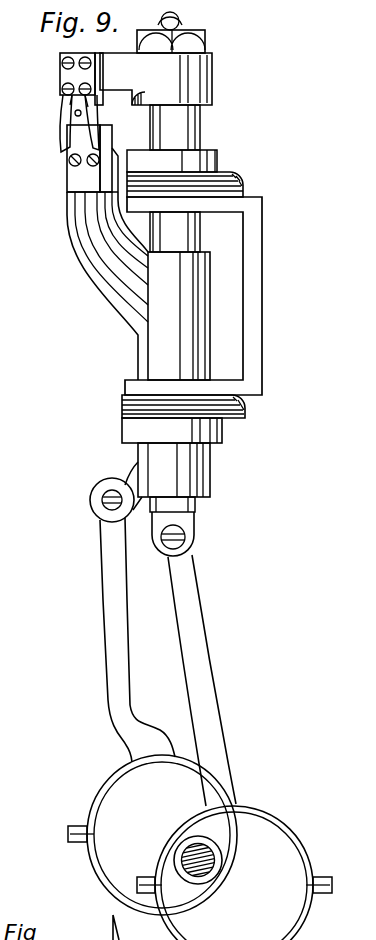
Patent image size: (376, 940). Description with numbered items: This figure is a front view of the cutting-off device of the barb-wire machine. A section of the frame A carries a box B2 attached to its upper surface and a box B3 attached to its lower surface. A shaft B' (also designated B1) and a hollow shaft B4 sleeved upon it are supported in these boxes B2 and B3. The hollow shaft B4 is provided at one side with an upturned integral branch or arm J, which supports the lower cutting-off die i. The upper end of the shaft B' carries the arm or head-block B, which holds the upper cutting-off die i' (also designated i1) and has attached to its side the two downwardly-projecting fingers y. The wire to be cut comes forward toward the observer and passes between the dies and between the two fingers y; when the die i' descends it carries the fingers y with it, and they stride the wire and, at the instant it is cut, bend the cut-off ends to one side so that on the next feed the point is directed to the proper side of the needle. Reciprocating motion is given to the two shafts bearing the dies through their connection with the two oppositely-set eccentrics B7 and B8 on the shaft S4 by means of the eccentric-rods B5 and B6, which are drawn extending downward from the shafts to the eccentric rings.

The frame A is at (250, 307).
The head-block B is at (156, 58).
The shaft B' is at (187, 330).
The shaft B1 is at (206, 511).
The box B2 is at (185, 175).
The box B3 is at (183, 419).
The hollow shaft B4 is at (150, 387).
The eccentric-rod B5 is at (202, 680).
The eccentric-rod B6 is at (137, 640).
The eccentric B7 is at (234, 873).
The eccentric B8 is at (152, 835).
The shaft S4 is at (205, 850).
The branch or arm J is at (107, 286).
The lower cutting-off die i is at (69, 158).
The upper cutting-off die i' is at (68, 79).
The upper cutting-off die i1 is at (62, 71).
The fingers y is at (74, 104).